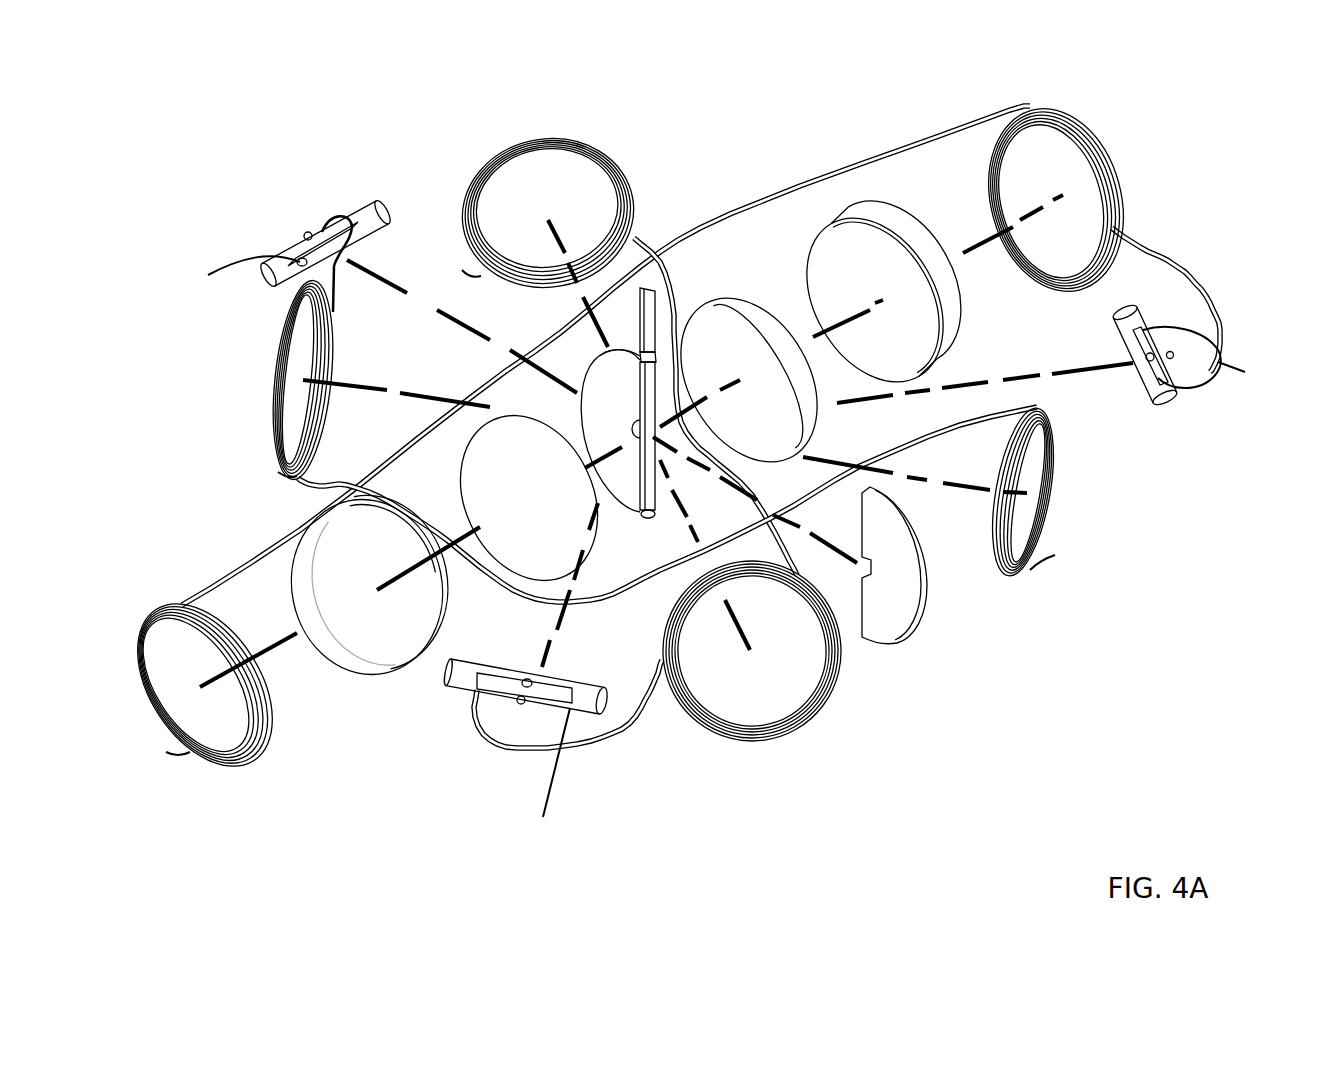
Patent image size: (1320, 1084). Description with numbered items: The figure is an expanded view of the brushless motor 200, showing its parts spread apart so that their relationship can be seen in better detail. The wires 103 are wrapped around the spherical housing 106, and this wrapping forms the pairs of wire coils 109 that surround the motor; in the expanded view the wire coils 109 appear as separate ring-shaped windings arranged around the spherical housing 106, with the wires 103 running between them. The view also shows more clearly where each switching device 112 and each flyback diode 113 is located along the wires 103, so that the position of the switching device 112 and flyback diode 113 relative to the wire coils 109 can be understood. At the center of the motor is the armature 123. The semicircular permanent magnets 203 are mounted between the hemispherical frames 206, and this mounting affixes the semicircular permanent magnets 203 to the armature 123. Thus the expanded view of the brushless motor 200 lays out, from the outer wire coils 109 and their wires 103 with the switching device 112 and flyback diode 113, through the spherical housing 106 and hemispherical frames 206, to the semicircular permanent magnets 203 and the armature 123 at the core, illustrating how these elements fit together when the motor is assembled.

The wires 103 is at (256, 250).
The spherical housing 106 is at (985, 327).
The wire coils 109 is at (504, 158).
The switching device 112 is at (298, 256).
The flyback diode 113 is at (306, 232).
The armature 123 is at (658, 283).
The brushless motor 200 is at (1113, 757).
The semicircular permanent magnets 203 is at (754, 497).
The hemispherical frames 206 is at (640, 438).